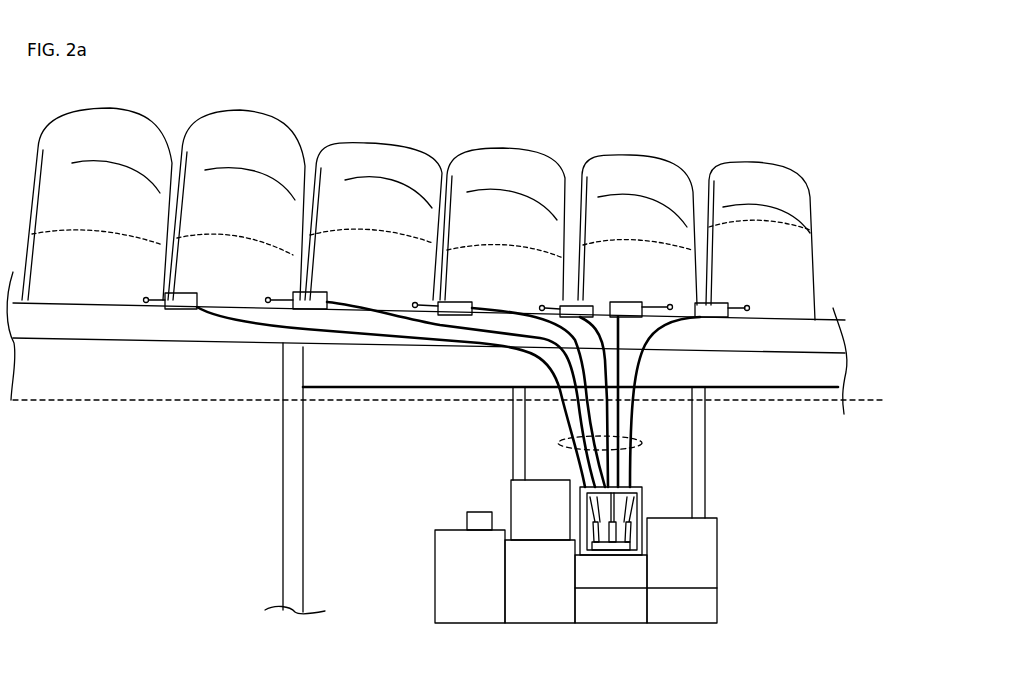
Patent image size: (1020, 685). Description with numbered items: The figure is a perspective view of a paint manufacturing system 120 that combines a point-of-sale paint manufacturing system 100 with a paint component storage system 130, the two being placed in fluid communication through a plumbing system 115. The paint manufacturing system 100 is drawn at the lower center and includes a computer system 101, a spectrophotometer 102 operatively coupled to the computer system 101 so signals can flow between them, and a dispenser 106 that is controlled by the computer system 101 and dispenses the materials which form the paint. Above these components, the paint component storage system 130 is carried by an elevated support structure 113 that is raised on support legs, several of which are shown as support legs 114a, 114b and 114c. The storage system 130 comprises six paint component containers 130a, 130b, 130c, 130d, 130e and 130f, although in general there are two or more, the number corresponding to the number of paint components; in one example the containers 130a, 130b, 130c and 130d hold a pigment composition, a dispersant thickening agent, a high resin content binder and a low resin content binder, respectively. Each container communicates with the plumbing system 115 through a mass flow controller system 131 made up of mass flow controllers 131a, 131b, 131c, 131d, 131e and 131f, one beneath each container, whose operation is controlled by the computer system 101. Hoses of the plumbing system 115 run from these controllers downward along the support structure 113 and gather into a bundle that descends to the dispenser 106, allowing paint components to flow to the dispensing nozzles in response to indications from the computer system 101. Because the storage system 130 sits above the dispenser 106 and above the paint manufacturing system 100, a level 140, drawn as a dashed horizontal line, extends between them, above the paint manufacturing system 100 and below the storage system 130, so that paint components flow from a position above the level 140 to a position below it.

The paint manufacturing system 100 is at (447, 474).
The computer system 101 is at (556, 526).
The spectrophotometer 102 is at (472, 523).
The dispenser 106 is at (628, 547).
The elevated support structure 113 is at (92, 334).
The support leg 114a is at (292, 467).
The support leg 114b is at (518, 450).
The support leg 114c is at (705, 487).
The plumbing system 115 is at (644, 436).
The paint manufacturing system 120 is at (150, 128).
The paint component storage system 130 is at (830, 200).
The paint component container 130a is at (129, 209).
The paint component container 130b is at (264, 224).
The paint component container 130c is at (404, 222).
The paint component container 130d is at (534, 234).
The paint component container 130e is at (667, 235).
The paint component container 130f is at (784, 255).
The mass flow controller system 131 is at (766, 305).
The mass flow controller 131a is at (181, 293).
The mass flow controller 131b is at (313, 292).
The mass flow controller 131c is at (455, 302).
The mass flow controller 131d is at (577, 306).
The mass flow controller 131e is at (626, 302).
The mass flow controller 131f is at (712, 303).
The level 140 is at (467, 402).